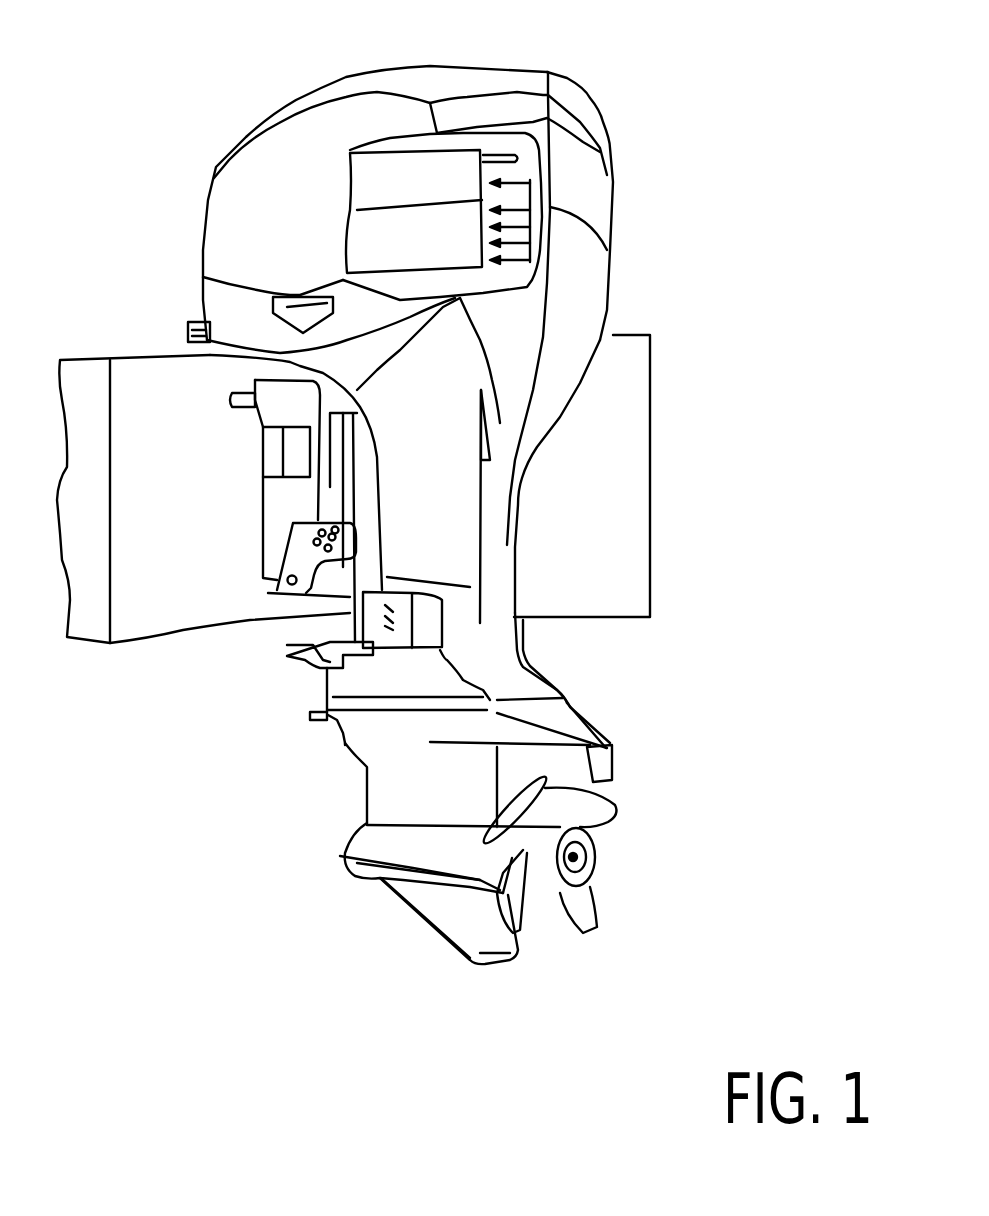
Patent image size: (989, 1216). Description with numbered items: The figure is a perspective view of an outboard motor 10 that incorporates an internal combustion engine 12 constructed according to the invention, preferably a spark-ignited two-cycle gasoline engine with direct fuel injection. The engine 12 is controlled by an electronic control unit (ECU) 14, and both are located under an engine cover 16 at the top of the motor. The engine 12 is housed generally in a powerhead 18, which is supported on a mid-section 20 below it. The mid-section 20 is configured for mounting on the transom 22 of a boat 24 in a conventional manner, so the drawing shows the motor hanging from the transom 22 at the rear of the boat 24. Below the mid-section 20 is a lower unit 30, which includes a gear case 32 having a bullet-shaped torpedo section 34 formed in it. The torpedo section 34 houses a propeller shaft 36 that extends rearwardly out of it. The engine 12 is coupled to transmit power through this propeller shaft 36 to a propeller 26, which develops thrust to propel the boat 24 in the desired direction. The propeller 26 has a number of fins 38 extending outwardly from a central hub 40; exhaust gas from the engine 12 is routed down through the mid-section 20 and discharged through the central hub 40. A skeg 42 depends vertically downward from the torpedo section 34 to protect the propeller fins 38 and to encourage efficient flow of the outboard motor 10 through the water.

The outboard motor 10 is at (673, 175).
The engine 12 is at (496, 293).
The electronic control unit (ECU) 14 is at (452, 140).
The engine cover 16 is at (563, 78).
The powerhead 18 is at (615, 297).
The mid-section 20 is at (517, 567).
The transom 22 is at (180, 617).
The boat 24 is at (137, 340).
The propeller 26 is at (620, 805).
The lower unit 30 is at (600, 713).
The gear case 32 is at (380, 778).
The torpedo section 34 is at (413, 867).
The propeller shaft 36 is at (582, 857).
The fins 38 is at (597, 930).
The central hub 40 is at (590, 880).
The skeg 42 is at (450, 937).